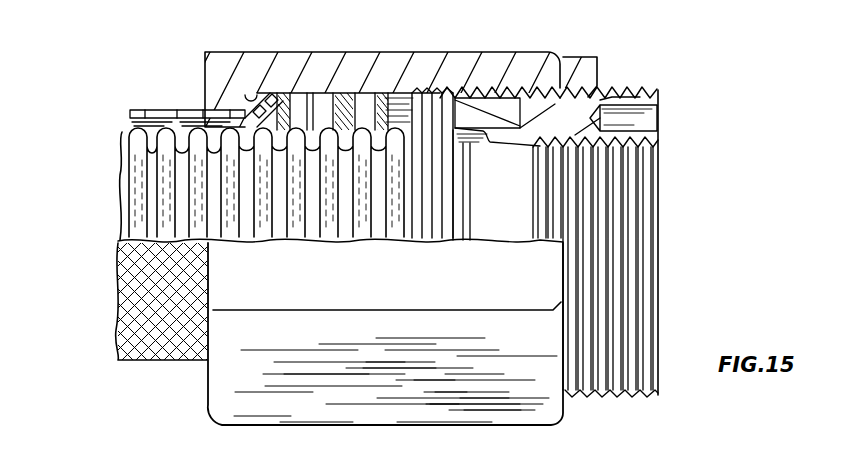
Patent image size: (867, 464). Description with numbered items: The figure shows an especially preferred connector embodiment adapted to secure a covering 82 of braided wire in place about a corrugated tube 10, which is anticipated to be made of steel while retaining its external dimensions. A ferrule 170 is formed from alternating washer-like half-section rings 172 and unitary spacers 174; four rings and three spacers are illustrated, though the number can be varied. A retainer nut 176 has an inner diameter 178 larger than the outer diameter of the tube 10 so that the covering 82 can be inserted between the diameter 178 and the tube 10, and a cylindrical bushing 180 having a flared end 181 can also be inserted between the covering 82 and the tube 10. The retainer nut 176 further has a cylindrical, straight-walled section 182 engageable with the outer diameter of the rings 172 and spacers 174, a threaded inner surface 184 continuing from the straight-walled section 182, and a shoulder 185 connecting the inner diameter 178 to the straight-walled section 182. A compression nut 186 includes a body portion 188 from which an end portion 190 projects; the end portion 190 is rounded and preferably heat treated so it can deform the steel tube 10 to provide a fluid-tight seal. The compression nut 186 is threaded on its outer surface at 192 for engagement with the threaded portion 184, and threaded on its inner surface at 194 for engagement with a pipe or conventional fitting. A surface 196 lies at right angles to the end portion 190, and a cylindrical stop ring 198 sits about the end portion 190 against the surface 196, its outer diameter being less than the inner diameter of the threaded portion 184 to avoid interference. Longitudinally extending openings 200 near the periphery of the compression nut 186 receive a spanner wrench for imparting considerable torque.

The tube 10 is at (116, 130).
The covering 82 is at (152, 112).
The inner diameter 178 is at (220, 112).
The ferrule 170 is at (341, 85).
The flared end 181 is at (262, 97).
The shoulder 185 is at (248, 106).
The half-section rings 172 is at (370, 145).
The unitary spacers 174 is at (400, 135).
The retainer nut 176 is at (388, 92).
The straight-walled section 182 is at (425, 92).
The threaded inner surface 184 is at (466, 92).
The surface 196 is at (536, 70).
The compression nut 186 is at (631, 74).
The outer surface threads 192 is at (618, 104).
The longitudinally extending openings 200 is at (646, 120).
The body portion 188 is at (507, 147).
The end portion 190 is at (480, 146).
The cylindrical stop ring 198 is at (470, 242).
The inner surface threads 194 is at (652, 163).
The cylindrical bushing 180 is at (215, 242).